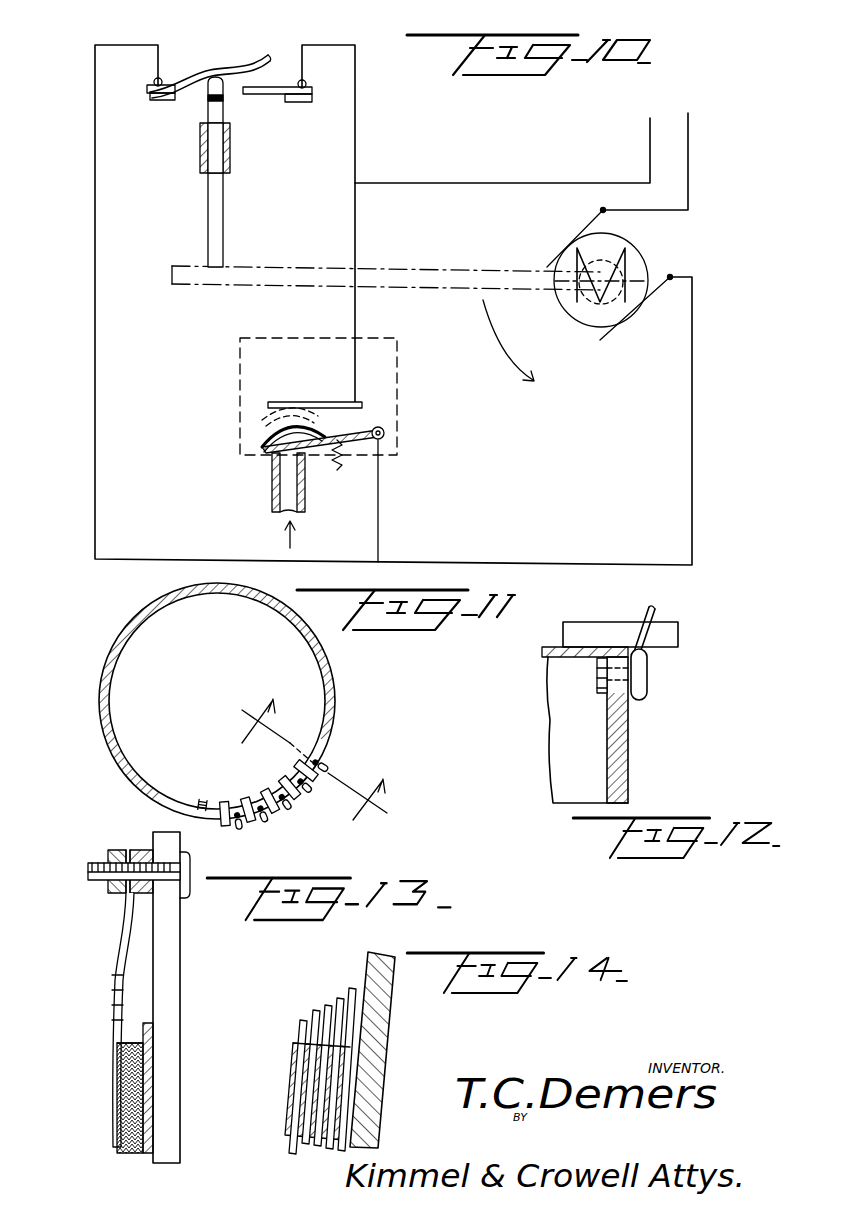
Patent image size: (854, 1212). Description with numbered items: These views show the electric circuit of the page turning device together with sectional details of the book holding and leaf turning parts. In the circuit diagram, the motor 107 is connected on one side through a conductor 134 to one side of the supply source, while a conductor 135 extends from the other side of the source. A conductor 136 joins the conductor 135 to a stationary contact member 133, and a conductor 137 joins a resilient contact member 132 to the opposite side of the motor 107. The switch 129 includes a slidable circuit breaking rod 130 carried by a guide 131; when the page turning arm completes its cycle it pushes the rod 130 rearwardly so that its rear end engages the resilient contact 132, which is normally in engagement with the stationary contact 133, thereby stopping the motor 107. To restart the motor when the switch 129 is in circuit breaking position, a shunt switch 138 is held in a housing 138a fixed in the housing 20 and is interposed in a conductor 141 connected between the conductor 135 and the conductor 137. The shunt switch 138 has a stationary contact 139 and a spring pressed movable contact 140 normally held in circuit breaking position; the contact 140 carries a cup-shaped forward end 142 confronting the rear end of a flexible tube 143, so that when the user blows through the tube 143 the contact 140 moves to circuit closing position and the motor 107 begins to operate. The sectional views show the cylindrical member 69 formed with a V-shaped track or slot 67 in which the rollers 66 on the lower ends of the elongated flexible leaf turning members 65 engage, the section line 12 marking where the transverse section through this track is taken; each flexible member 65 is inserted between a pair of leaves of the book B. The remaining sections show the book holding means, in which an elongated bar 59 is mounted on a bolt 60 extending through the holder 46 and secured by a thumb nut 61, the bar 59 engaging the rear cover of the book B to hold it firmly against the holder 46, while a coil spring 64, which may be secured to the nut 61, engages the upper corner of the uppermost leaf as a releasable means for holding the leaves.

In FIG. 10, the motor 107 is at (642, 253).
In FIG. 10, the switch 129 is at (188, 98).
In FIG. 10, the slidable circuit breaking rod 130 is at (223, 217).
In FIG. 10, the guide 131 is at (230, 162).
In FIG. 10, the resilient contact member 132 is at (238, 62).
In FIG. 10, the stationary contact member 133 is at (257, 95).
In FIG. 10, the conductor 134 is at (688, 168).
In FIG. 10, the conductor 135 is at (526, 183).
In FIG. 10, the conductor 136 is at (355, 145).
In FIG. 10, the conductor 137 is at (95, 243).
In FIG. 10, the shunt switch 138 is at (308, 400).
In FIG. 10, the housing 138a is at (400, 415).
In FIG. 10, the stationary contact 139 is at (277, 400).
In FIG. 10, the spring pressed movable contact 140 is at (365, 425).
In FIG. 10, the conductor 141 is at (355, 318).
In FIG. 10, the cup-shaped forward end 142 is at (265, 445).
In FIG. 10, the flexible tube 143 is at (270, 475).
In FIG. 11, the section line 12 is at (306, 775).
In FIG. 11, the elongated flexible members 65 is at (325, 765).
In FIG. 12, the elongated flexible members 65 is at (655, 612).
In FIG. 14, the elongated flexible members 65 is at (314, 1013).
In FIG. 11, the roller 66 is at (318, 760).
In FIG. 12, the roller 66 is at (647, 695).
In FIG. 11, the V-shaped track 67 is at (300, 783).
In FIG. 12, the V-shaped track 67 is at (605, 705).
In FIG. 11, the cylindrical member 69 is at (335, 715).
In FIG. 12, the cylindrical member 69 is at (622, 783).
In FIG. 13, the housing 20 is at (180, 1052).
In FIG. 14, the housing 20 is at (388, 1038).
In FIG. 13, the holder 46 is at (153, 955).
In FIG. 14, the holder 46 is at (370, 1103).
In FIG. 13, the elongated bar 59 is at (163, 1085).
In FIG. 13, the bolt 60 is at (88, 872).
In FIG. 13, the thumb nut 61 is at (108, 856).
In FIG. 13, the coil spring 64 is at (110, 1062).
In FIG. 13, the book B is at (148, 1122).
In FIG. 14, the book B is at (355, 1067).